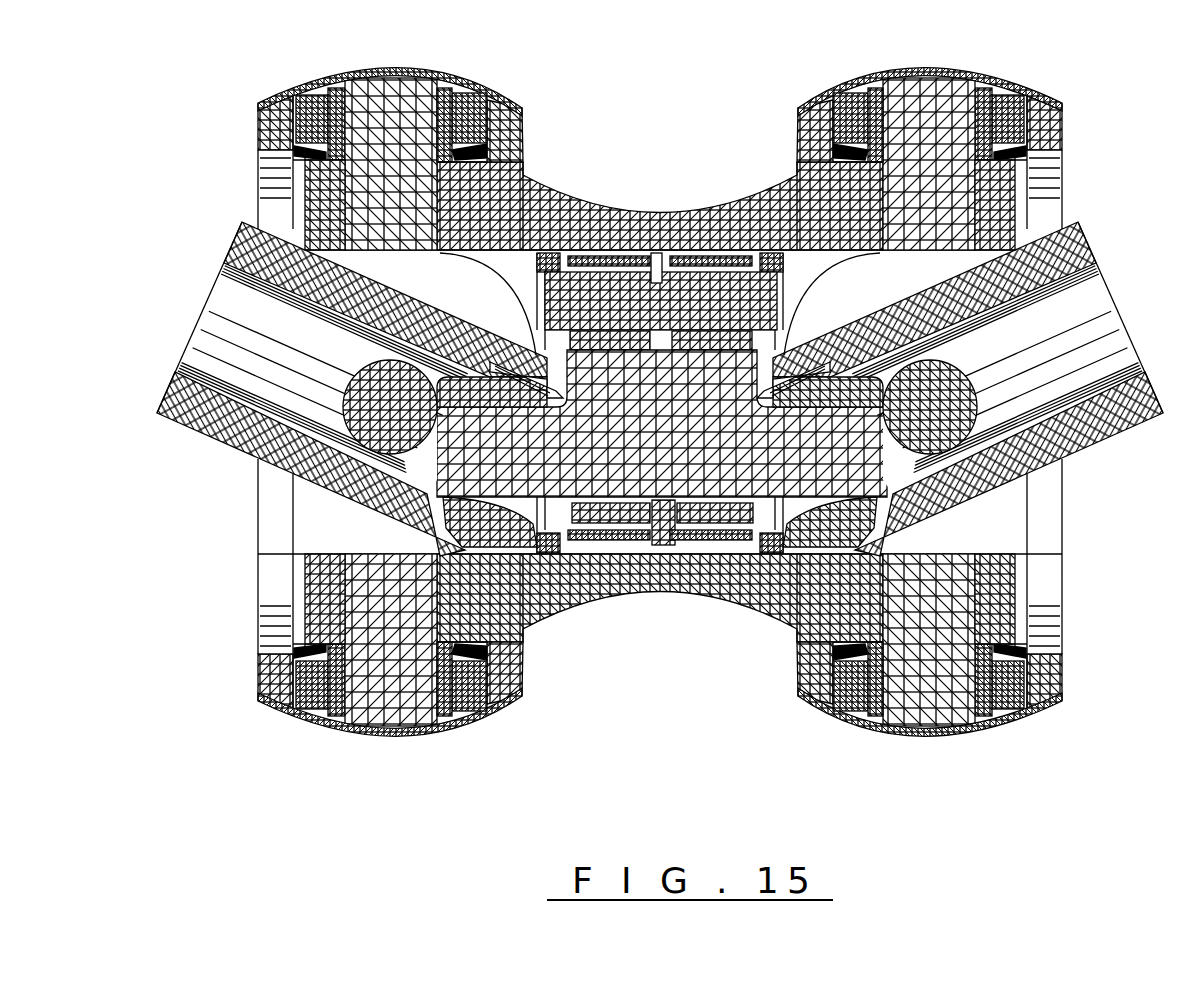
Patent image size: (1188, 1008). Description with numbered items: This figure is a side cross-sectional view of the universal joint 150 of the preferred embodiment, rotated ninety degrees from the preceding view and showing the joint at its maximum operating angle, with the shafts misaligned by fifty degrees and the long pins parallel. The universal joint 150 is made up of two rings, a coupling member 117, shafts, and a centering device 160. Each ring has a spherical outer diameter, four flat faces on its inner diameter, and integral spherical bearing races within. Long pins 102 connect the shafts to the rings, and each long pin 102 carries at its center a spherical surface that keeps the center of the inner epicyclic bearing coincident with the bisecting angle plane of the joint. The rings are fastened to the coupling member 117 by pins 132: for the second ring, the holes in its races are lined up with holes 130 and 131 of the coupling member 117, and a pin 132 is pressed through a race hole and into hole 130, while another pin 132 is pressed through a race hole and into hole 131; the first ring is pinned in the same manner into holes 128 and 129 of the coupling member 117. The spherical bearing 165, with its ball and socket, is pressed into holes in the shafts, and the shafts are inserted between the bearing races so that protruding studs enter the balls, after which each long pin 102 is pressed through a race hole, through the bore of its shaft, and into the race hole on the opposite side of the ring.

The long pin 102 is at (1067, 452).
The coupling member 117 is at (661, 567).
The hole 128 is at (985, 607).
The hole 129 is at (985, 205).
The hole 130 is at (330, 203).
The hole 131 is at (343, 603).
The pin 132 is at (386, 687).
The universal joint 150 is at (663, 425).
The centering device 160 is at (637, 296).
The spherical bearing 165 is at (440, 551).